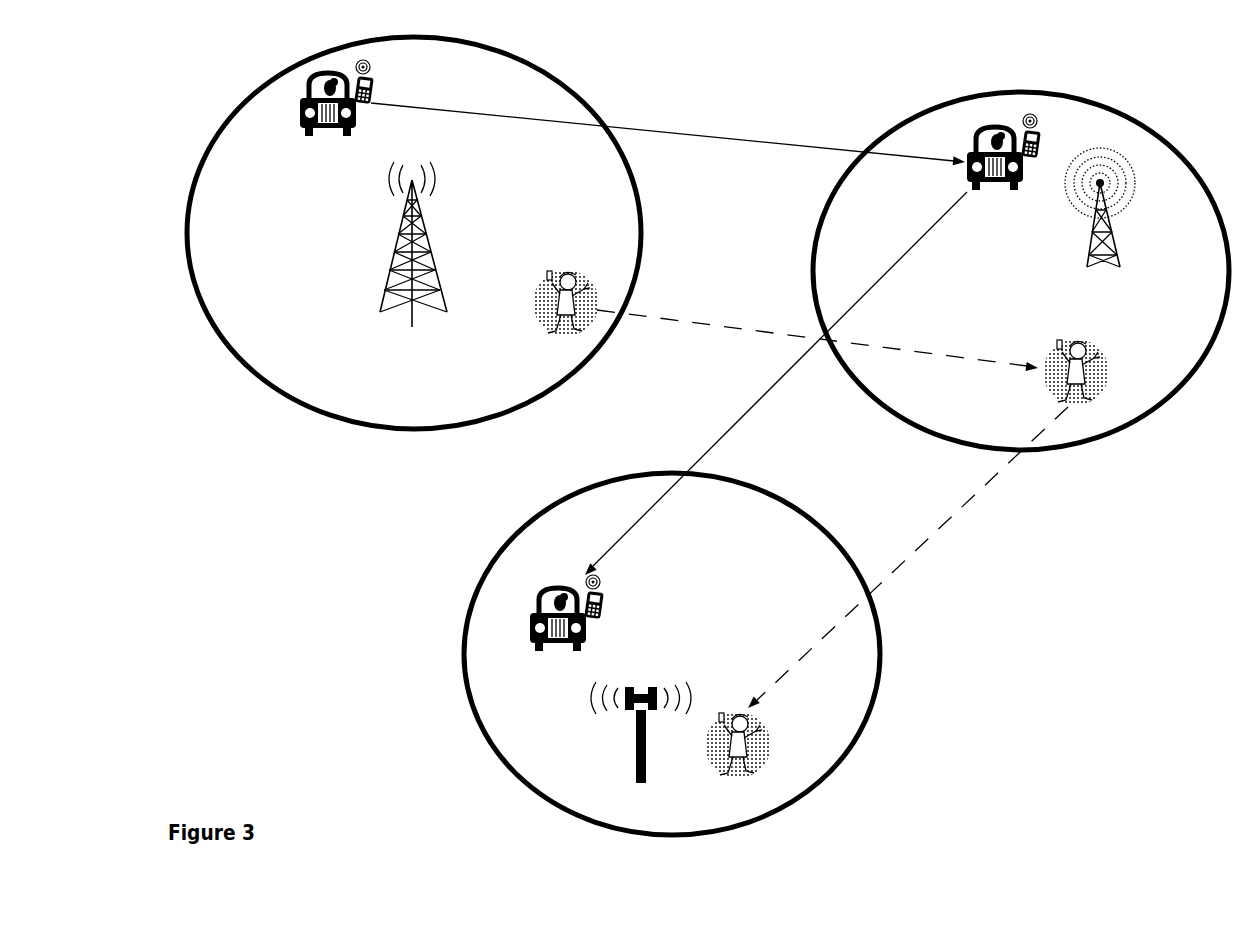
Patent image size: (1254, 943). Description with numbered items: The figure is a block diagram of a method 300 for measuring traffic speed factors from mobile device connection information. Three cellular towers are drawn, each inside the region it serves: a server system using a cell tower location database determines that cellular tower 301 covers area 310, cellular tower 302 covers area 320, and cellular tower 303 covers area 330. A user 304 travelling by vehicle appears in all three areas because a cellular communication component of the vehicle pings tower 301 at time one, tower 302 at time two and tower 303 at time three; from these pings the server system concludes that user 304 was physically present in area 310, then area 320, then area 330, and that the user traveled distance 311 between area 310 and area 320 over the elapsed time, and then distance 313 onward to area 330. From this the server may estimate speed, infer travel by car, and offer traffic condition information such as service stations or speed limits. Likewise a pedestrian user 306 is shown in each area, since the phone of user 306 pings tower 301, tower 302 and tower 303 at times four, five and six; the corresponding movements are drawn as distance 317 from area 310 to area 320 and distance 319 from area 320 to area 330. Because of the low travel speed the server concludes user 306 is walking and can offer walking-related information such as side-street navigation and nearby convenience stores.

The method for measuring traffic speed factors 300 is at (702, 78).
The cellular tower 301 is at (406, 256).
The cellular tower 302 is at (1111, 220).
The cellular tower 303 is at (640, 746).
The user 304 is at (677, 368).
The user 306 is at (821, 509).
The area 310 is at (414, 244).
The distance 311 is at (778, 143).
The distance 313 is at (708, 451).
The distance 317 is at (770, 333).
The distance 319 is at (947, 520).
The area 320 is at (1021, 256).
The area 330 is at (672, 665).